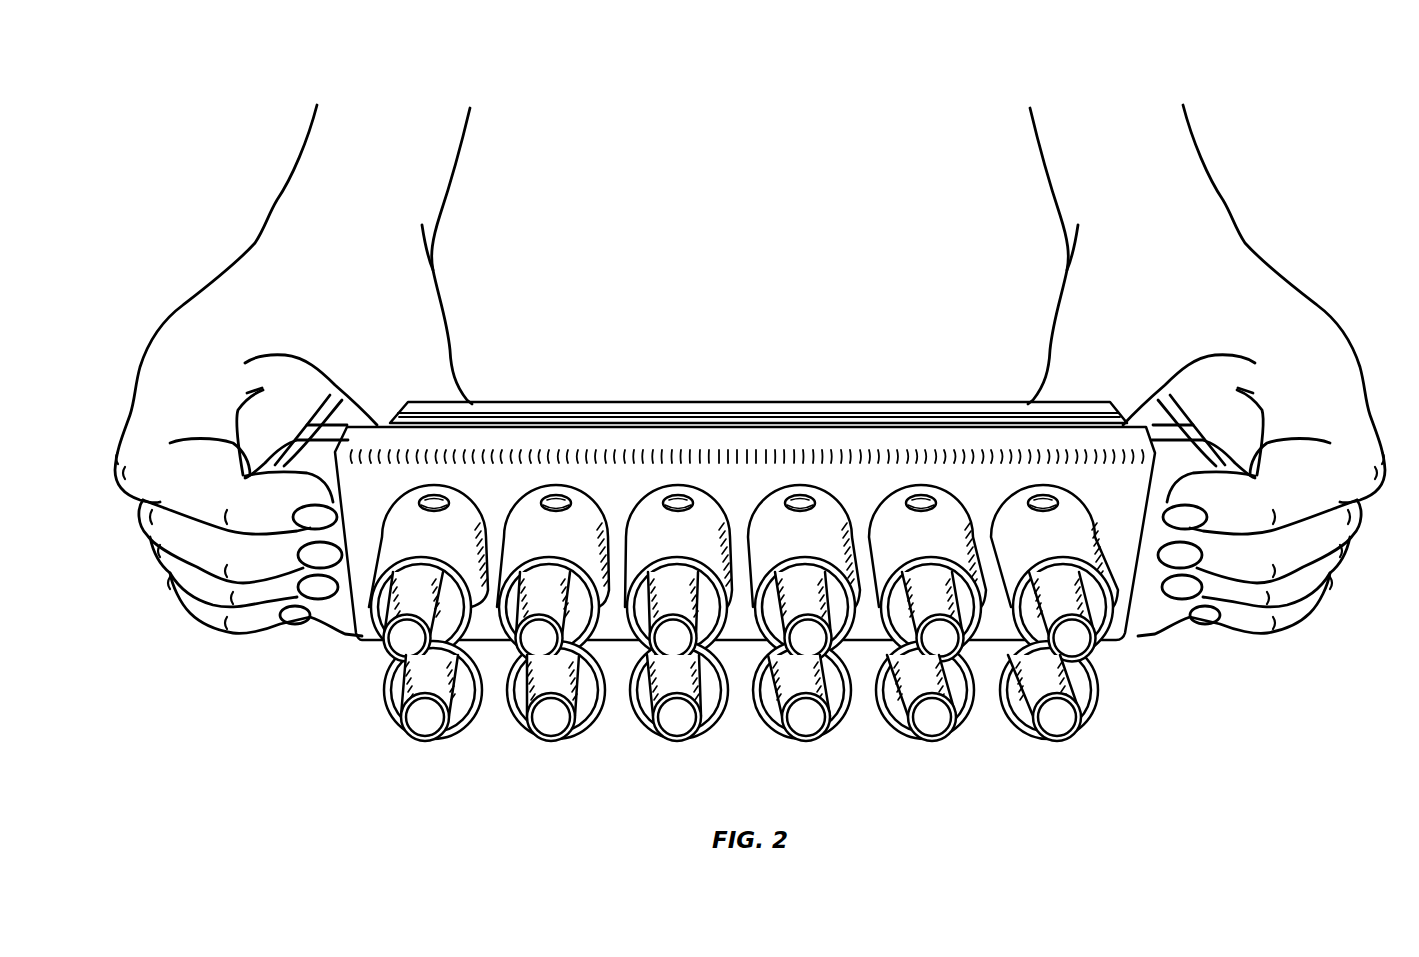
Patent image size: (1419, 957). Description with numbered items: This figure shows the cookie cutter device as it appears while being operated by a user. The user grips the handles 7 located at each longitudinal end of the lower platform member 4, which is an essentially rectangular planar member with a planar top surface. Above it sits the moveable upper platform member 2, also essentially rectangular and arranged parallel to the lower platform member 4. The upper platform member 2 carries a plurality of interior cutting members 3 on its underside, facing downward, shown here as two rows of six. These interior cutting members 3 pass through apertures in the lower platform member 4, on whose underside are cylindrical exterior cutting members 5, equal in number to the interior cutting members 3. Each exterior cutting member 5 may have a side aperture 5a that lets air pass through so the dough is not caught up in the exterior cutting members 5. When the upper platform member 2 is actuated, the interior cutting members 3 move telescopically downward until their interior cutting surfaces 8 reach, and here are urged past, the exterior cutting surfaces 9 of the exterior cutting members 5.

The upper platform member 2 is at (712, 410).
The interior cutting members 3 is at (1040, 683).
The lower platform member 4 is at (840, 437).
The exterior cutting members 5 is at (757, 571).
The side aperture 5a is at (665, 500).
The handles 7 is at (297, 452).
The interior cutting surface 8 is at (1067, 733).
The exterior cutting surfaces 9 is at (1097, 692).